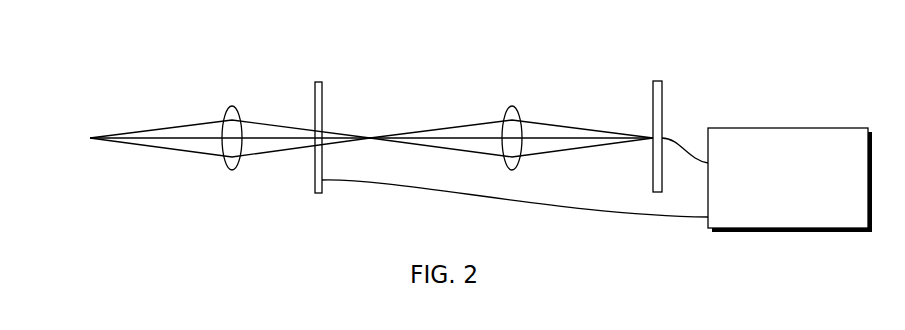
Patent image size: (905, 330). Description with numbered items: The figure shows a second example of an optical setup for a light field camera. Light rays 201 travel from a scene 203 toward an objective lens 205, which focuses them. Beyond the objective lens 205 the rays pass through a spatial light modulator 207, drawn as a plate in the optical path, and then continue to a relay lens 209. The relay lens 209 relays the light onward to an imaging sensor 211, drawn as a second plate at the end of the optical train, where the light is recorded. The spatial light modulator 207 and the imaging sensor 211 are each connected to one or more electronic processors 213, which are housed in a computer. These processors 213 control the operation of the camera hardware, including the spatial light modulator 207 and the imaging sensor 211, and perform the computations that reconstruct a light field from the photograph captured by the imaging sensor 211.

The light rays 201 is at (140, 118).
The scene 203 is at (58, 114).
The objective lens 205 is at (235, 106).
The spatial light modulator 207 is at (323, 87).
The relay lens 209 is at (518, 107).
The imaging sensor 211 is at (663, 92).
The electronic processor 213 is at (774, 204).